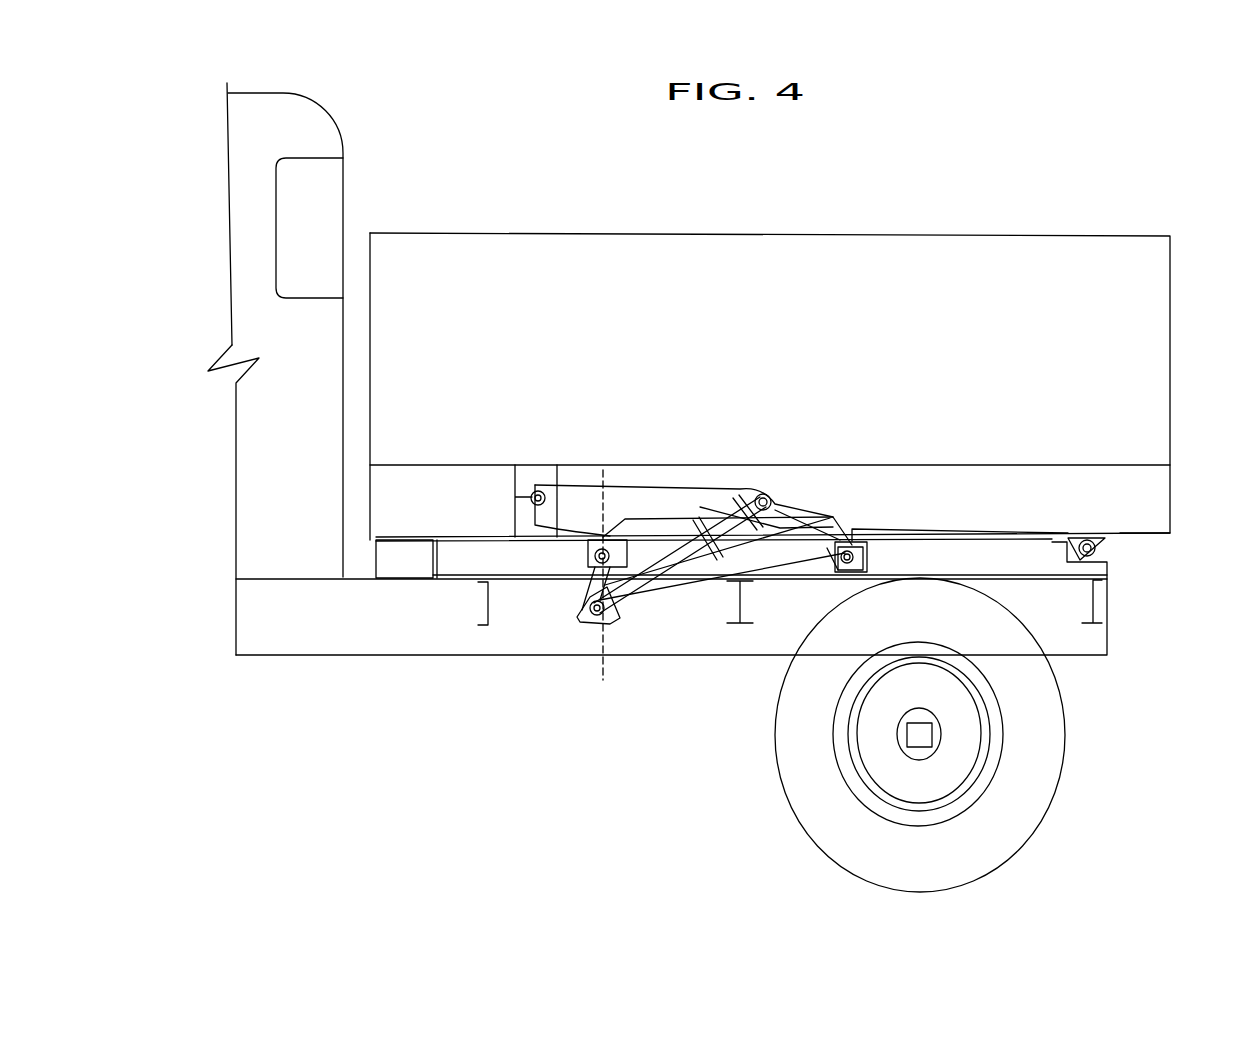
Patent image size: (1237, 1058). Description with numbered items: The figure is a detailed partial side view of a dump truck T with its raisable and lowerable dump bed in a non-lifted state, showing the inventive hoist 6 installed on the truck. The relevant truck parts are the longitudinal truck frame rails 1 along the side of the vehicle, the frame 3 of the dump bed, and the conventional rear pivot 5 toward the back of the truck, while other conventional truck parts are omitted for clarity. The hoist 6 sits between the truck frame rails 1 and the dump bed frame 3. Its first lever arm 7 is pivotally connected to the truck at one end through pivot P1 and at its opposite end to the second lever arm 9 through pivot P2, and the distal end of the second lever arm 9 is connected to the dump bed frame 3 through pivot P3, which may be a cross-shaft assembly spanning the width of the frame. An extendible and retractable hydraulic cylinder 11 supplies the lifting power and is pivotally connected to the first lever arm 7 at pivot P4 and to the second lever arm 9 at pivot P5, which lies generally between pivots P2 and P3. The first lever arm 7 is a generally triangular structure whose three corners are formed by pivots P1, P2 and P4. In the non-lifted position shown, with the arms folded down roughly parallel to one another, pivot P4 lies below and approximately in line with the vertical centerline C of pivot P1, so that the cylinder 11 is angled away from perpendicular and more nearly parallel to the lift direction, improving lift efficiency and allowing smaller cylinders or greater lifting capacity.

The dump truck T is at (1062, 205).
The truck frame rails 1 is at (382, 622).
The frame 3 is at (430, 497).
The rear pivot 5 is at (1080, 532).
The hoist 6 is at (560, 558).
The first lever arm 7 is at (767, 563).
The second lever arm 9 is at (647, 493).
The hydraulic cylinder 11 is at (632, 617).
The pivot P1 is at (583, 559).
The pivot P2 is at (843, 540).
The pivot P3 is at (537, 490).
The pivot P4 is at (588, 620).
The pivot P5 is at (760, 490).
The vertical centerline C is at (597, 698).